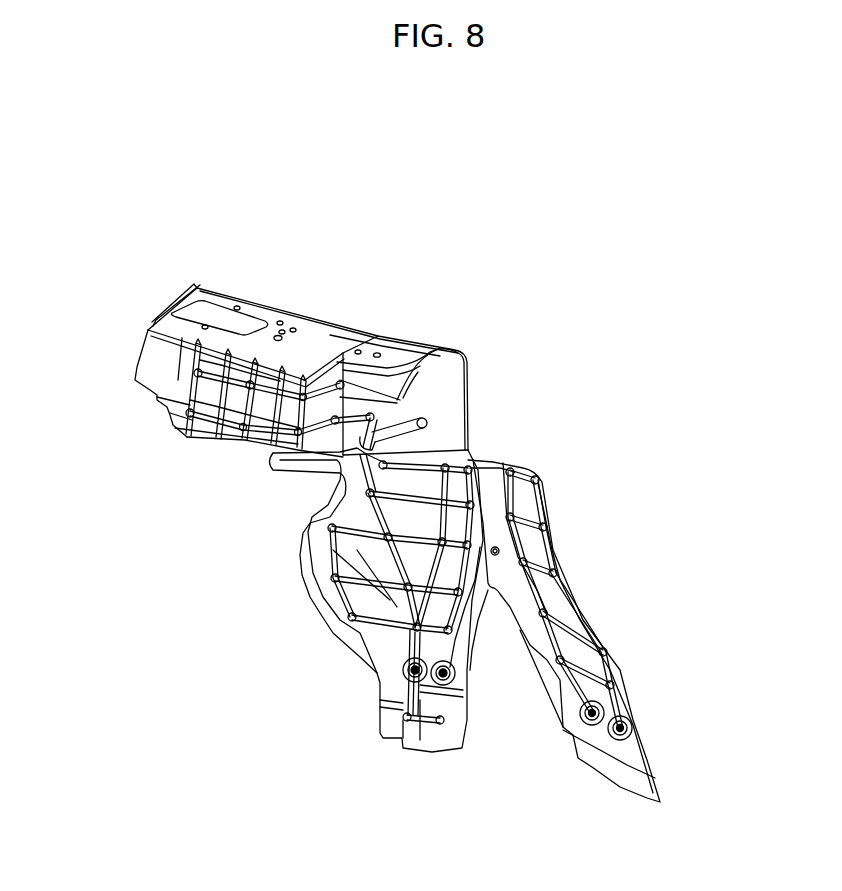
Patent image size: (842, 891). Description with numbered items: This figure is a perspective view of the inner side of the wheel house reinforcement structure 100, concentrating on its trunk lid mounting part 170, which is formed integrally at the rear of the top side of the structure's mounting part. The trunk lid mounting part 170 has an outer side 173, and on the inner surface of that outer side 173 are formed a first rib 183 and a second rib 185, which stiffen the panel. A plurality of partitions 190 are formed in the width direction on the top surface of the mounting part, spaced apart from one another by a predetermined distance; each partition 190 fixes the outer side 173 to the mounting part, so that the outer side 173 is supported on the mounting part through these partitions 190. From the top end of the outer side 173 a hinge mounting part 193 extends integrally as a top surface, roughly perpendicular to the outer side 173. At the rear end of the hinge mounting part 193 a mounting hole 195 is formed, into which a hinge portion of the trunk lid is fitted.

The wheel house reinforcement structure 100 is at (421, 182).
The trunk lid mounting part 170 is at (314, 303).
The outer side 173 is at (155, 360).
The first rib 183 is at (207, 383).
The second rib 185 is at (231, 402).
The partition 190 is at (437, 408).
The hinge mounting part 193 is at (325, 330).
The mounting hole 195 is at (240, 322).